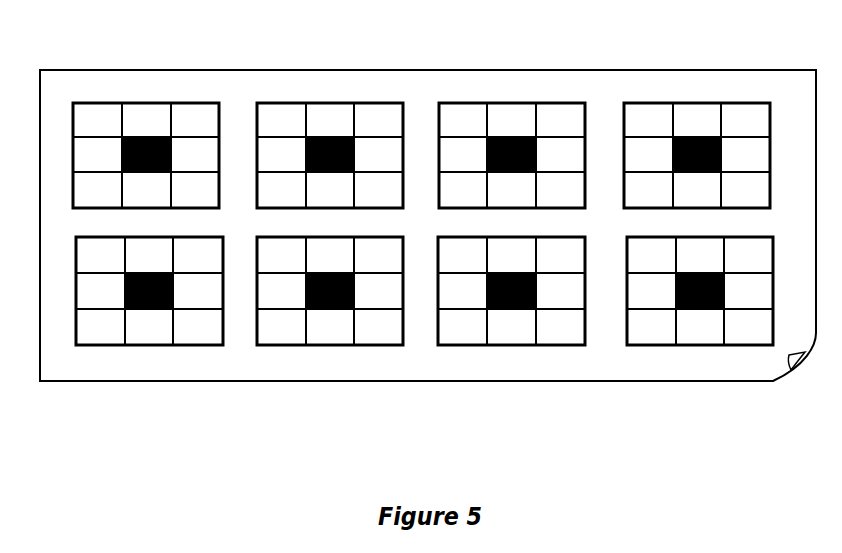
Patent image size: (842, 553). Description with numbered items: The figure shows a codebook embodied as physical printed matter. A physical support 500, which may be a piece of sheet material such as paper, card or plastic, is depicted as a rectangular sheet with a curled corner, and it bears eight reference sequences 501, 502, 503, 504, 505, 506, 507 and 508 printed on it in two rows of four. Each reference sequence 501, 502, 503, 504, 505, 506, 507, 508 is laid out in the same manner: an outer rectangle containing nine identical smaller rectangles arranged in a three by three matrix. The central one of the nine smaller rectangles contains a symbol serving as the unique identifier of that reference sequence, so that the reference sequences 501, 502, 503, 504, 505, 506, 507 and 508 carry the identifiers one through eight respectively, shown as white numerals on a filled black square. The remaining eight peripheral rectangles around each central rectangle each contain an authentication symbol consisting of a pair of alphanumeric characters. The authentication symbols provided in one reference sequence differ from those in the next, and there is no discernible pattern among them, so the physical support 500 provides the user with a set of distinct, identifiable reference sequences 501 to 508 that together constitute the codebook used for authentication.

The physical support 500 is at (77, 65).
The reference sequence 501 is at (146, 95).
The reference sequence 502 is at (329, 95).
The reference sequence 503 is at (512, 95).
The reference sequence 504 is at (699, 95).
The reference sequence 505 is at (131, 358).
The reference sequence 506 is at (335, 358).
The reference sequence 507 is at (519, 358).
The reference sequence 508 is at (708, 359).